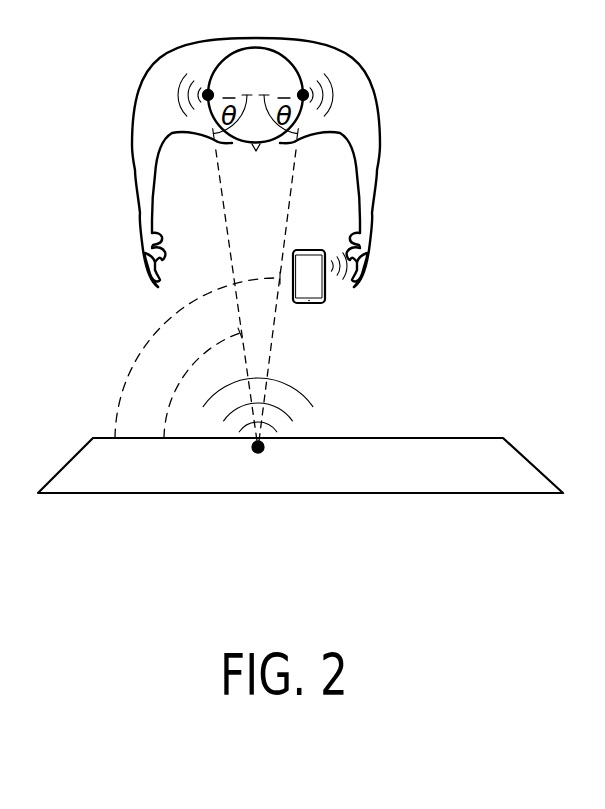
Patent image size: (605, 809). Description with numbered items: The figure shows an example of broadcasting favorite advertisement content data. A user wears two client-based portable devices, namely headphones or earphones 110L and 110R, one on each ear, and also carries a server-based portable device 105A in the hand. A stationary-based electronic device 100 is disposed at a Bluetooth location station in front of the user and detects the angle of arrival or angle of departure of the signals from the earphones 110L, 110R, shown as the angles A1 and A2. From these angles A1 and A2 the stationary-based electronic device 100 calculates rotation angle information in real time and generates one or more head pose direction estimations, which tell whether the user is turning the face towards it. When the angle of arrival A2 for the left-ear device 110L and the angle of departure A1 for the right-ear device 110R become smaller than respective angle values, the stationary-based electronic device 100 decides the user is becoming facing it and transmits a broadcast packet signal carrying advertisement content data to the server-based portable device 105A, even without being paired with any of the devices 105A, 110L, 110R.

The client-based portable device 110R is at (204, 89).
The client-based portable device 110L is at (308, 89).
The server-based portable device 105A is at (327, 293).
The stationary-based electronic device 100 is at (262, 452).
The angle of departure A1 is at (168, 416).
The angle of arrival A2 is at (127, 386).